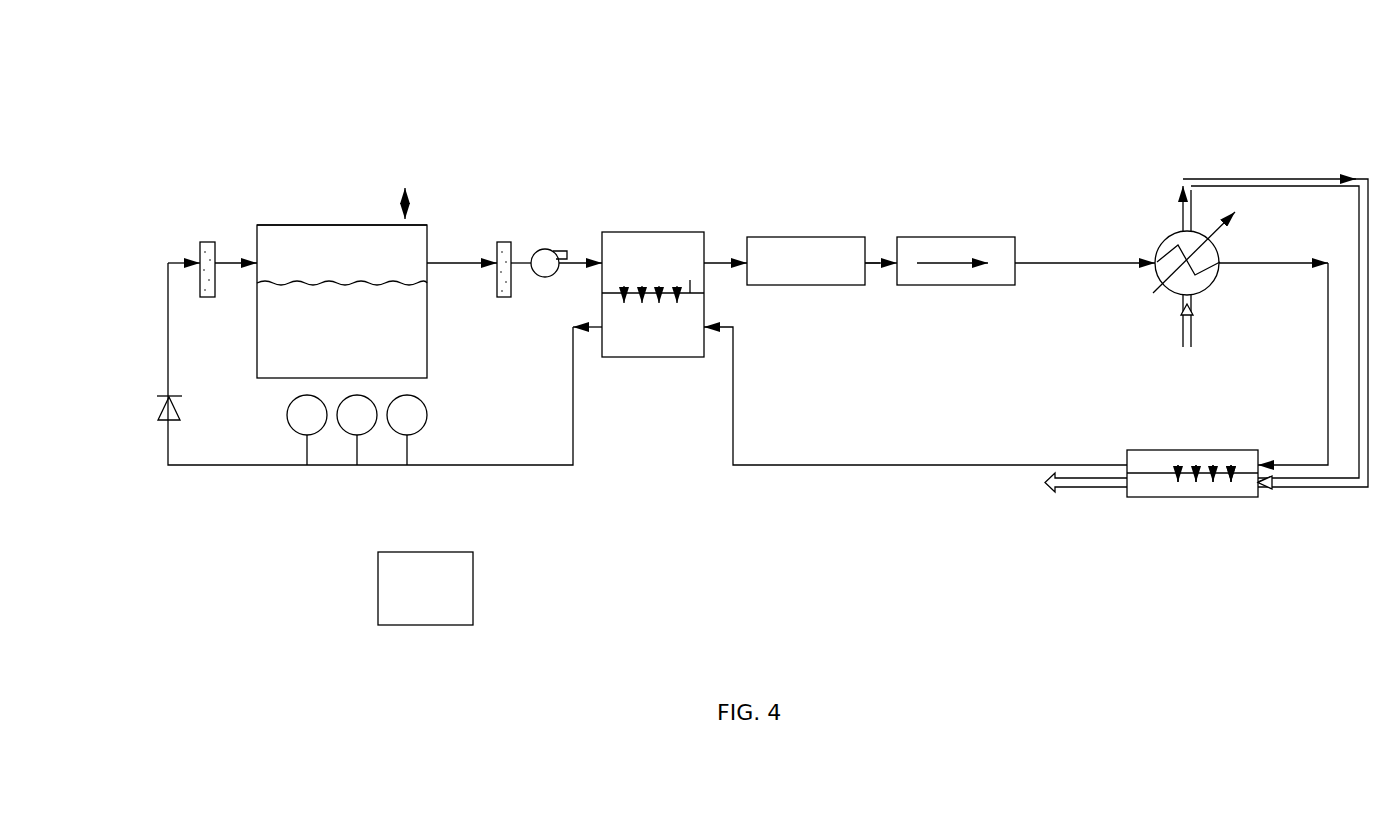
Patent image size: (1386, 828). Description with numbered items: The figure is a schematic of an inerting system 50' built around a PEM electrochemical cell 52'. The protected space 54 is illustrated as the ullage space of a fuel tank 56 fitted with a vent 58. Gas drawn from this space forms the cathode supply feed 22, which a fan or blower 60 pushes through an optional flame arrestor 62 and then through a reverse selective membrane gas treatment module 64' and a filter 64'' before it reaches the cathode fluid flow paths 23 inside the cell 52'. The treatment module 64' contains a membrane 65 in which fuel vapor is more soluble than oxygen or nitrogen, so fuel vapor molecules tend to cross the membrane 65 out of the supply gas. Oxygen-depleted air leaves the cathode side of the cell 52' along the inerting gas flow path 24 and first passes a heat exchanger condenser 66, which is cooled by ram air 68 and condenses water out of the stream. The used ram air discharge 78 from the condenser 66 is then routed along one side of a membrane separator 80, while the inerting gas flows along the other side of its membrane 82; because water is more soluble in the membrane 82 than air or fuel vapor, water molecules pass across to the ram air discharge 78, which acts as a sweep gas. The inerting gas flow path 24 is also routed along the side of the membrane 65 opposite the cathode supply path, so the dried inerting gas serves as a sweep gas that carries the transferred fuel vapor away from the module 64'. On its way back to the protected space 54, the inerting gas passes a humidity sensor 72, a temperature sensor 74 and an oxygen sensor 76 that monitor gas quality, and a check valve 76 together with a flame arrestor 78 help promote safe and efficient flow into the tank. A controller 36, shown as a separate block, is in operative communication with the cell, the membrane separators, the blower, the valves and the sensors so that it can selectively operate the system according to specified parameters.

The inerting system 50' is at (1067, 59).
The inerting gas flow path 24 is at (1080, 263).
The flame arrestor / ram air discharge 78 is at (212, 240).
The protected space 54 is at (342, 250).
The fuel tank 56 is at (277, 225).
The vent 58 is at (410, 201).
The flame arrestor 62 is at (506, 242).
The fan or blower 60 is at (548, 249).
The reverse selective membrane gas treatment module 64' is at (653, 261).
The membrane 65 is at (690, 290).
The filter 64'' is at (806, 226).
The cathode supply feed 22 is at (872, 256).
The PEM electrochemical cell 52' is at (956, 229).
The cathode fluid flow paths 23 is at (940, 260).
The heat exchanger condenser 66 is at (1168, 233).
The ram air 68 is at (1180, 330).
The membrane separator 80 is at (1143, 450).
The membrane 82 is at (1150, 475).
The humidity sensor 72 is at (287, 418).
The temperature sensor 74 is at (360, 395).
The oxygen sensor / check valve 76 is at (427, 418).
The controller 36 is at (473, 585).